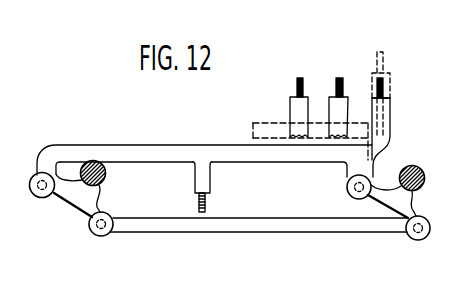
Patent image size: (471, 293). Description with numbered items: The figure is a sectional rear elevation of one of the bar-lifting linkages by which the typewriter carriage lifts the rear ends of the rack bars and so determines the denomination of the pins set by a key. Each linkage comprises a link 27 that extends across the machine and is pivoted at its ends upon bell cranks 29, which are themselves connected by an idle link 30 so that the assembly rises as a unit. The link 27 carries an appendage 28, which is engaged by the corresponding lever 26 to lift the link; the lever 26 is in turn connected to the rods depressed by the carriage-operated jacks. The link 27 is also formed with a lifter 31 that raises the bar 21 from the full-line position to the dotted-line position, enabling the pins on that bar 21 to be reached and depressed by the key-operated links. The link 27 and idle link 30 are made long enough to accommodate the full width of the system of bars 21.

The bar 21 is at (380, 53).
The lever 26 is at (206, 205).
The link 27 is at (265, 123).
The appendage 28 is at (195, 187).
The bell crank 29 is at (80, 197).
The idle link 30 is at (225, 229).
The lifter 31 is at (391, 98).